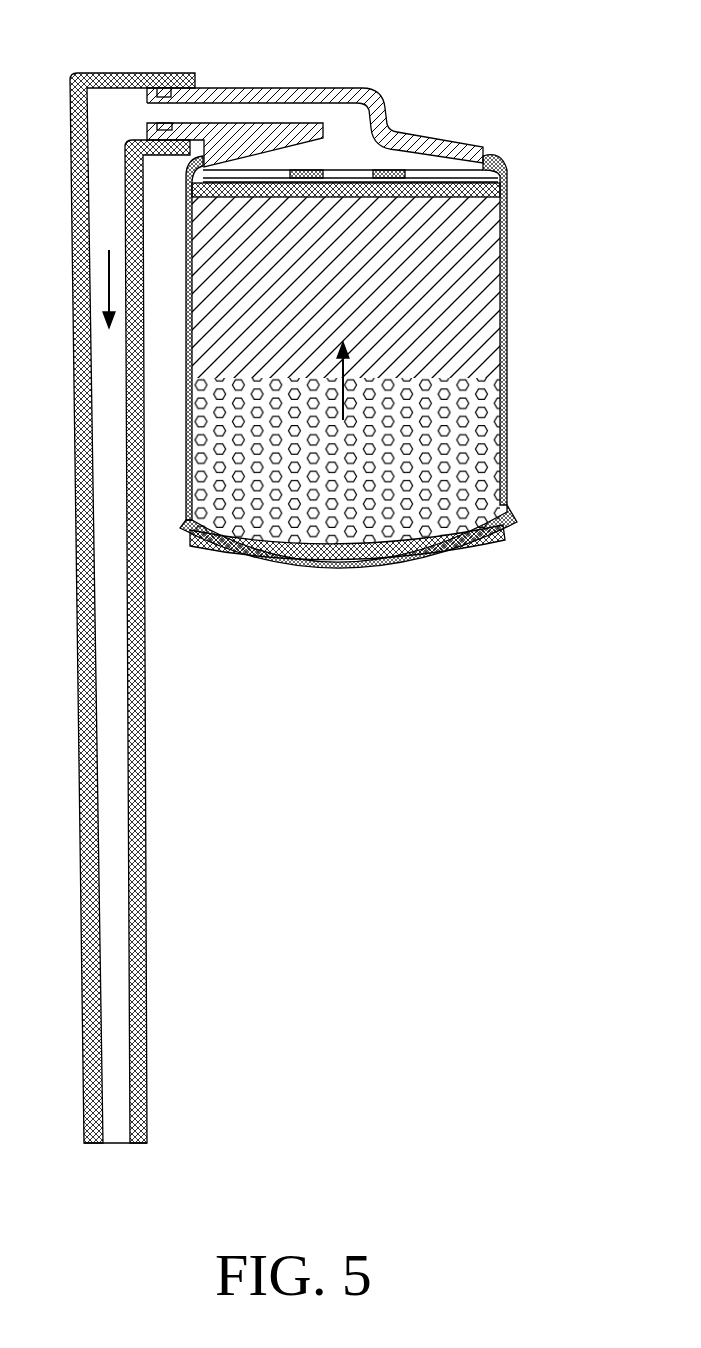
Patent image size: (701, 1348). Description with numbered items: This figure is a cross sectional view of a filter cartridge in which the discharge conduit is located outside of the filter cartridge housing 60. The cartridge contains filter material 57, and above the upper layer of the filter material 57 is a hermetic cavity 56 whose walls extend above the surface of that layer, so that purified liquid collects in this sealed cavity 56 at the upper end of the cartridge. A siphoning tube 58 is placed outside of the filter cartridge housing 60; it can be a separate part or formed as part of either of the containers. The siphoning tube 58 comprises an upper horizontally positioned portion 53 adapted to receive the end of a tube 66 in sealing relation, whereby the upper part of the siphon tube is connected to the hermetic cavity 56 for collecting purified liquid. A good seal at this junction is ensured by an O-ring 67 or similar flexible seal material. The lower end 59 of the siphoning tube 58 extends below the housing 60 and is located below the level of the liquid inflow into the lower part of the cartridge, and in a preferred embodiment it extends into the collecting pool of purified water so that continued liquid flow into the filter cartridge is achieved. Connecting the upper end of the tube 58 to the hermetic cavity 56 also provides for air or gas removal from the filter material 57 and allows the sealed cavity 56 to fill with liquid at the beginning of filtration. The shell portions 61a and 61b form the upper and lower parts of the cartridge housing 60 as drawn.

The upper horizontally positioned portion 53 is at (112, 73).
The O-ring 67 is at (176, 74).
The tube 66 is at (288, 93).
The hermetic cavity 56 is at (395, 155).
The upper shell portion 61a is at (495, 173).
The filter material 57 is at (472, 325).
The filter cartridge housing 60 is at (512, 393).
The lower shell portion 61b is at (505, 523).
The siphoning tube 58 is at (143, 730).
The lower end 59 is at (118, 1146).